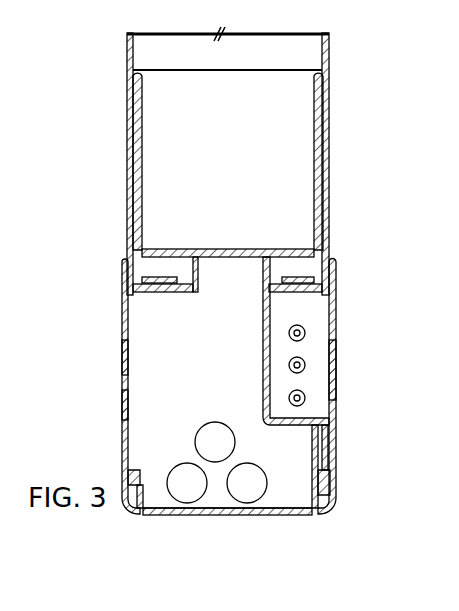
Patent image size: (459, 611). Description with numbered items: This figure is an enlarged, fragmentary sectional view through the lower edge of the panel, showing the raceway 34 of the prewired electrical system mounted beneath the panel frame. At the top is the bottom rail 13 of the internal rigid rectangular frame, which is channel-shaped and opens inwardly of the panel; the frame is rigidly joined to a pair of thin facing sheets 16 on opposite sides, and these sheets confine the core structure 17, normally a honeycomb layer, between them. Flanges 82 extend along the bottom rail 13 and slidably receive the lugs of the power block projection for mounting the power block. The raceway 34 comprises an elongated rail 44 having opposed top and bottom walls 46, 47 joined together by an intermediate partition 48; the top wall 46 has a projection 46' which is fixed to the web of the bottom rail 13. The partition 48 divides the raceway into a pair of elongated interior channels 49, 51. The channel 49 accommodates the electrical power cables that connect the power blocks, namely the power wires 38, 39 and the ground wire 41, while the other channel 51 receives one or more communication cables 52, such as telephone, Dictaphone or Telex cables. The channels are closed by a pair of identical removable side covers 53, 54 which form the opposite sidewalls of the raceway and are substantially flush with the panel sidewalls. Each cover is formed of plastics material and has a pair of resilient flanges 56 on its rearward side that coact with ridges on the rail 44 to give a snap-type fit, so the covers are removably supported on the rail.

The bottom rail 13 is at (128, 148).
The facing sheets 16 is at (127, 50).
The core structure 17 is at (262, 50).
The flanges 82 is at (172, 276).
The top wall 46 is at (163, 303).
The projection 46' is at (290, 254).
The raceway 34 is at (121, 333).
The channel 51 is at (130, 358).
The side cover 54 is at (125, 404).
The intermediate partition 48 is at (265, 378).
The channel 49 is at (316, 380).
The ground wire 41 is at (305, 333).
The power wire 38 is at (305, 365).
The power wire 39 is at (305, 398).
The side cover 53 is at (334, 440).
The resilient flanges 56 is at (138, 480).
The elongated rail 44 is at (298, 511).
The bottom wall 47 is at (225, 516).
The communication cables 52 is at (186, 490).